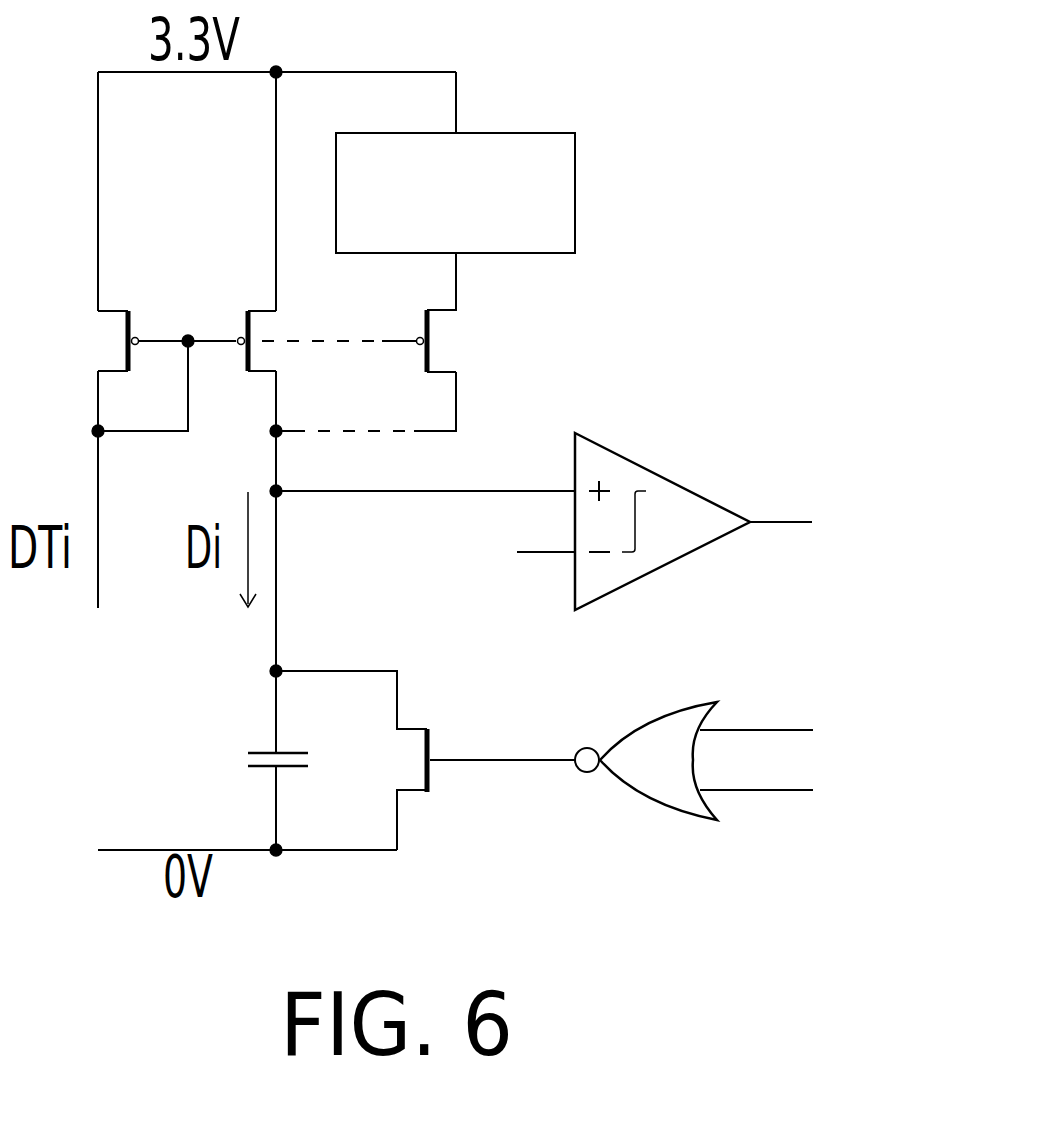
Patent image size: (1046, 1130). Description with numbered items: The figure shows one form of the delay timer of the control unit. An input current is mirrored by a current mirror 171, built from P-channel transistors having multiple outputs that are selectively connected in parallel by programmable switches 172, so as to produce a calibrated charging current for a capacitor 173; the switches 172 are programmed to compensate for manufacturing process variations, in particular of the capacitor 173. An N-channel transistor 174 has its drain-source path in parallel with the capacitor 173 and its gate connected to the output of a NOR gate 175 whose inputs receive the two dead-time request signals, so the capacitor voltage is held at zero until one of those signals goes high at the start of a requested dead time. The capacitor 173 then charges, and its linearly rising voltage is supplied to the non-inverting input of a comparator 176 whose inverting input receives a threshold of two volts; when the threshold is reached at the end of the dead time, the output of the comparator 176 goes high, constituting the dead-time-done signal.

The current mirror 171 is at (208, 310).
The programmable switches 172 is at (577, 180).
The capacitor 173 is at (235, 740).
The N-channel transistor 174 is at (443, 737).
The NOR gate 175 is at (634, 742).
The comparator 176 is at (672, 488).